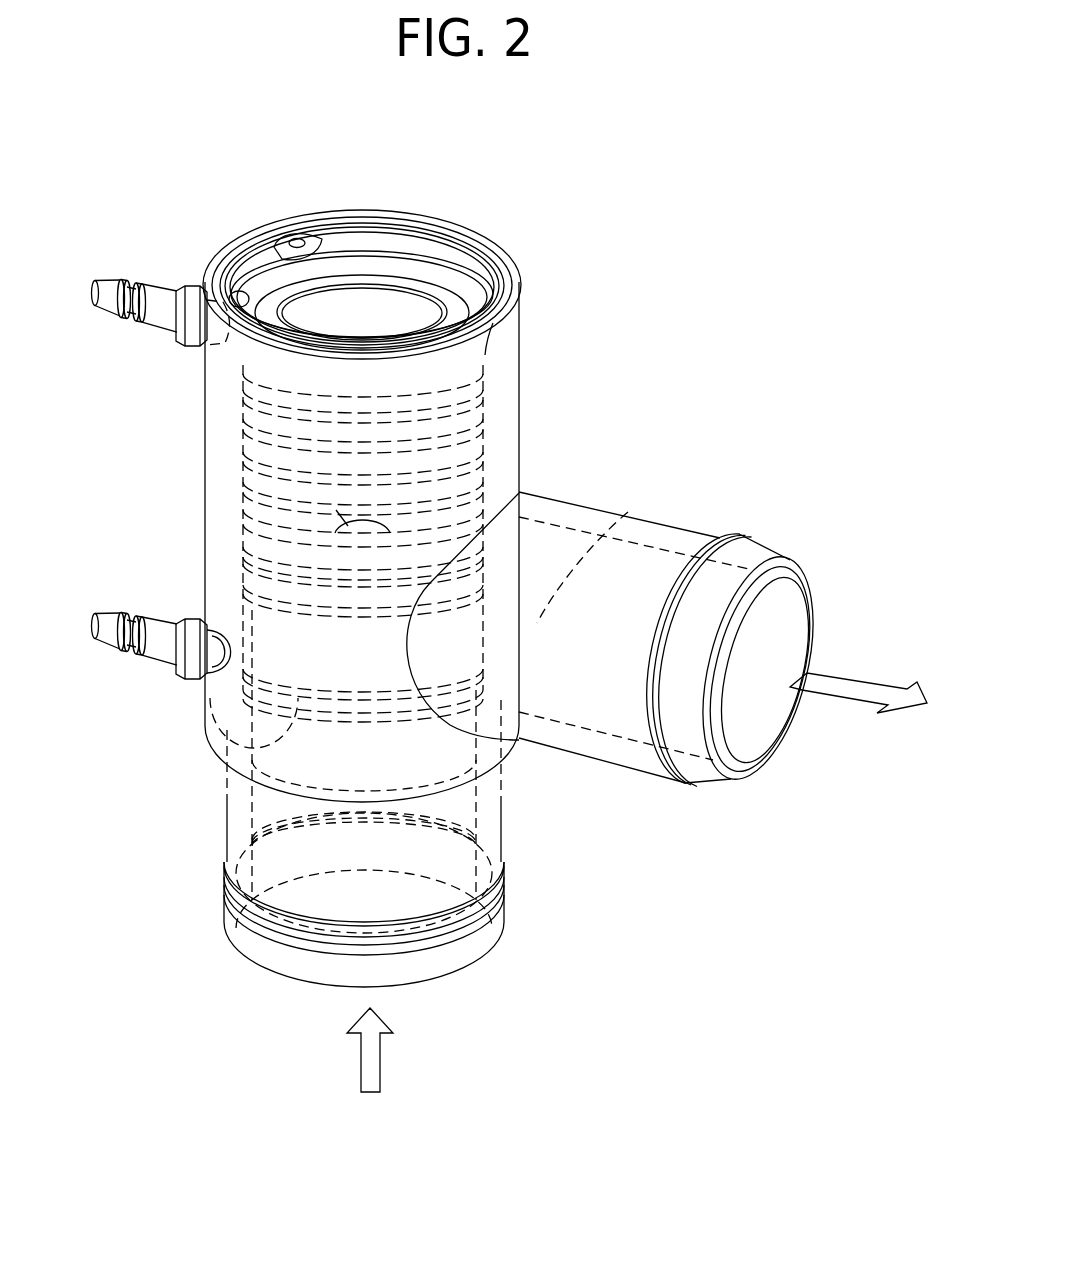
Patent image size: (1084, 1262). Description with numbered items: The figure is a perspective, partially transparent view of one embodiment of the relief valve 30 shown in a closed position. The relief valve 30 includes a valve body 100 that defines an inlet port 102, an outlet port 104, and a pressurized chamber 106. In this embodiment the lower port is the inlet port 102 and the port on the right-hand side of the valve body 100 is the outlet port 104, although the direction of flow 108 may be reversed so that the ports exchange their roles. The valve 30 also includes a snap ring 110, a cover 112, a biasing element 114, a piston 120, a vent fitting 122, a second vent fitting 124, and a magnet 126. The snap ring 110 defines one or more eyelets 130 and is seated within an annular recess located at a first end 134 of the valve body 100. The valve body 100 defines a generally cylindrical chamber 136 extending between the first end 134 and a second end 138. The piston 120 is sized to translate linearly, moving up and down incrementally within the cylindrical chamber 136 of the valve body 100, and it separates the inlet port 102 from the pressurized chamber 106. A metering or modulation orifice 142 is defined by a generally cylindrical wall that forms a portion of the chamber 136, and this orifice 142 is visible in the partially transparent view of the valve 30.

The relief valve 30 is at (720, 378).
The valve body 100 is at (520, 387).
The inlet port 102 is at (500, 845).
The outlet port 104 is at (698, 534).
The pressurized chamber 106 is at (495, 477).
The direction of flow 108 is at (867, 683).
The snap ring 110 is at (348, 250).
The cover 112 is at (400, 308).
The biasing element 114 is at (493, 387).
The piston 120 is at (240, 748).
The vent fitting 122 is at (163, 640).
The vent fitting 124 is at (160, 303).
The magnet 126 is at (283, 484).
The eyelet 130 is at (310, 238).
The first end 134 is at (519, 297).
The cylindrical chamber 136 is at (508, 871).
The second end 138 is at (500, 920).
The metering or modulation orifice 142 is at (628, 512).